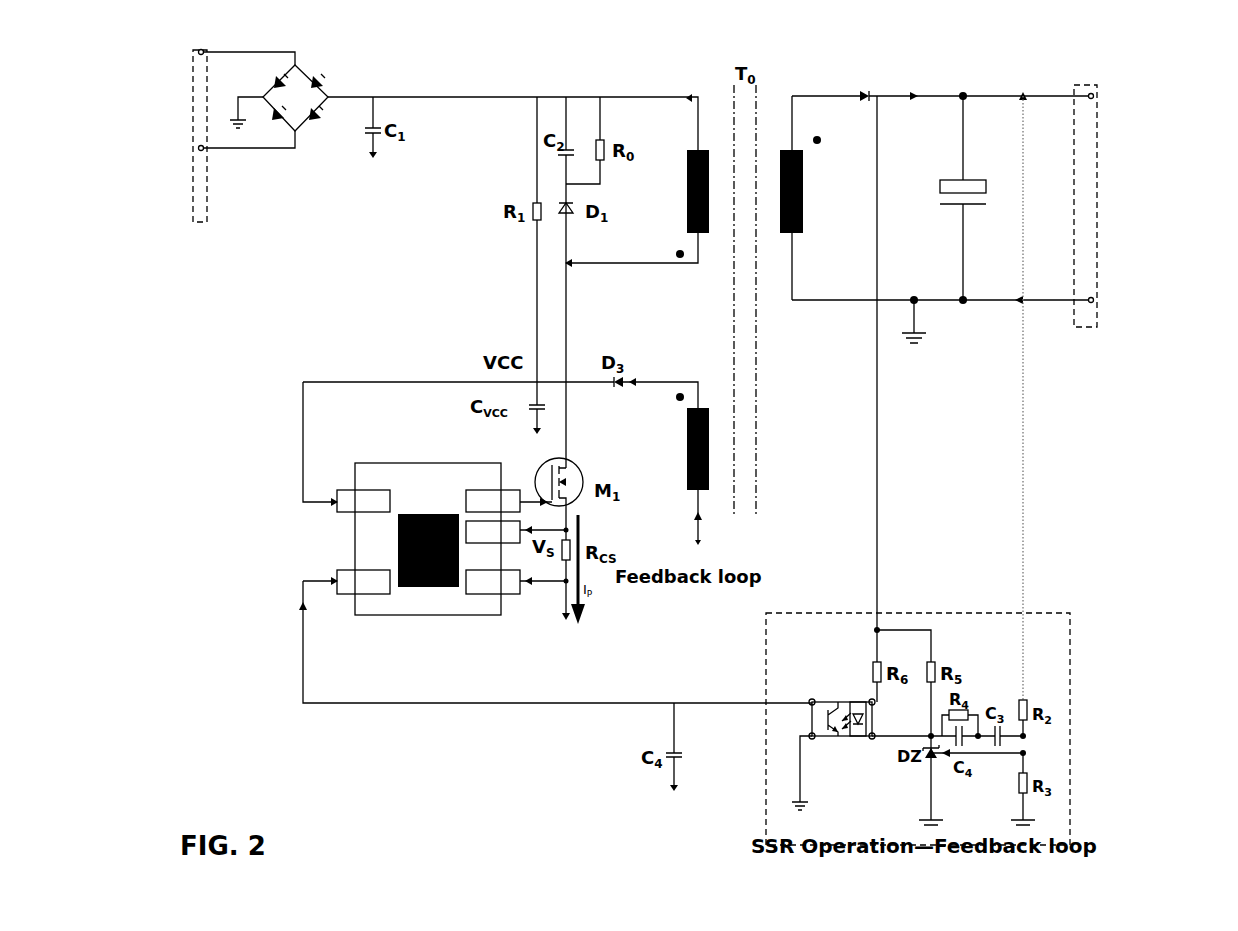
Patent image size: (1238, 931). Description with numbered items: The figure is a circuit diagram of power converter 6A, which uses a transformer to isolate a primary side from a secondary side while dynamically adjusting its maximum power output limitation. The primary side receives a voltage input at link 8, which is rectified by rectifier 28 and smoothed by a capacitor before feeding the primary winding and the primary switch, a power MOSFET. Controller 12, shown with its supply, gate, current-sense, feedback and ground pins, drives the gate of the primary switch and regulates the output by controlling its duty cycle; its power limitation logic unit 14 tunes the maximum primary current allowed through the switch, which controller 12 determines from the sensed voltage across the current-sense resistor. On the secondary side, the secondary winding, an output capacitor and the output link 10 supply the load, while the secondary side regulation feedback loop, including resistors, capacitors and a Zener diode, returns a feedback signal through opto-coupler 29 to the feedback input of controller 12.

The link 8 is at (206, 204).
The rectifier 28 is at (296, 88).
The power converter 6A is at (1150, 112).
The link 10 is at (1096, 262).
The controller 12 is at (428, 539).
The power limitation logic unit 14 is at (428, 550).
The opto-coupler 29 is at (804, 743).